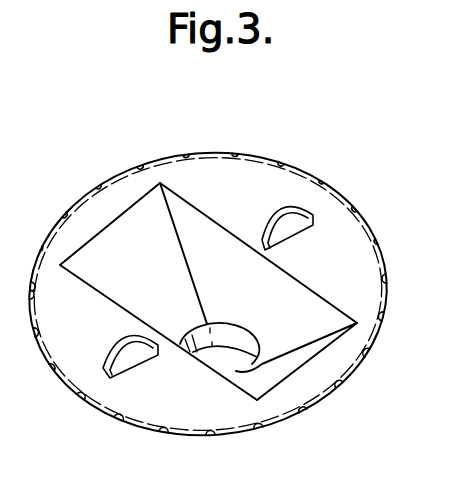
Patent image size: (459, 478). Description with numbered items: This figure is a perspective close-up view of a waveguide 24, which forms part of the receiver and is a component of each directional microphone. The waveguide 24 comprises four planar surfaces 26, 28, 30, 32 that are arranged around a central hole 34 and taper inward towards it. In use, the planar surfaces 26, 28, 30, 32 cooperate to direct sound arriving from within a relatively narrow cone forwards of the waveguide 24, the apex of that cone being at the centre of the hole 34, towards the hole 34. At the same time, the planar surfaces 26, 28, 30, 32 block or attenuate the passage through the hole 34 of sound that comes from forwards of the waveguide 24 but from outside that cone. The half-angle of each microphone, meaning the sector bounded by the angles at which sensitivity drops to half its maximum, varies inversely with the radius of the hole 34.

The waveguide 24 is at (281, 147).
The planar surface 26 is at (207, 226).
The planar surface 28 is at (307, 352).
The planar surface 30 is at (100, 285).
The planar surface 32 is at (130, 220).
The central hole 34 is at (292, 407).